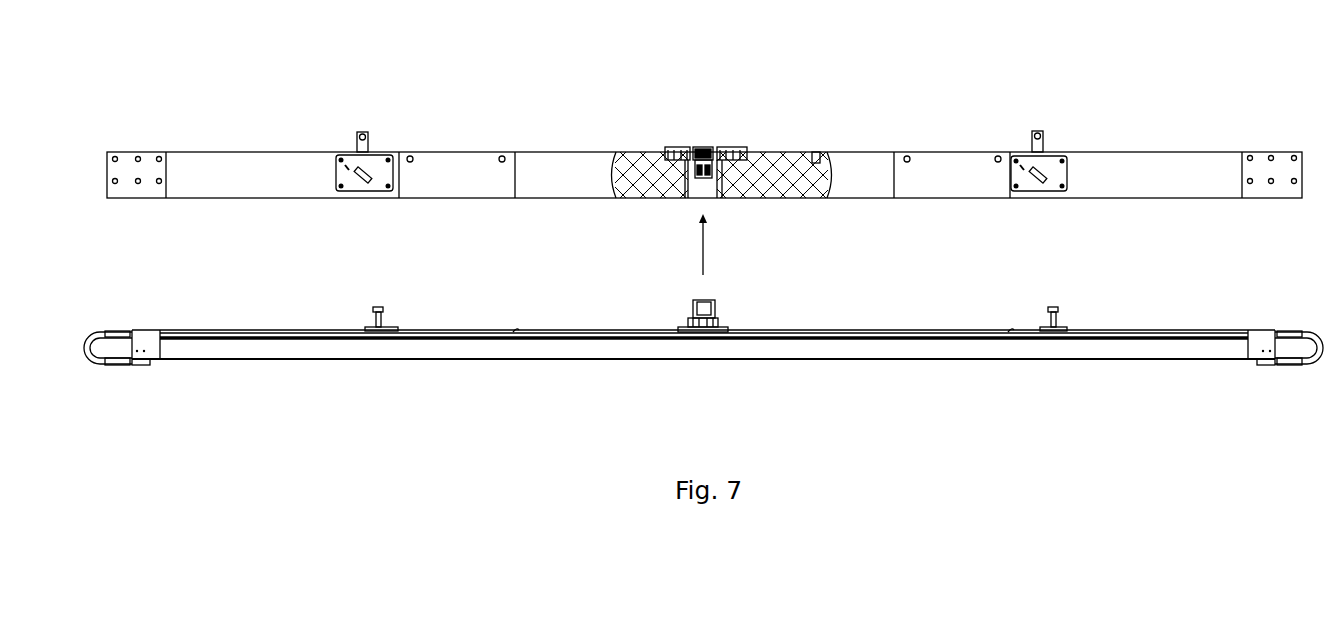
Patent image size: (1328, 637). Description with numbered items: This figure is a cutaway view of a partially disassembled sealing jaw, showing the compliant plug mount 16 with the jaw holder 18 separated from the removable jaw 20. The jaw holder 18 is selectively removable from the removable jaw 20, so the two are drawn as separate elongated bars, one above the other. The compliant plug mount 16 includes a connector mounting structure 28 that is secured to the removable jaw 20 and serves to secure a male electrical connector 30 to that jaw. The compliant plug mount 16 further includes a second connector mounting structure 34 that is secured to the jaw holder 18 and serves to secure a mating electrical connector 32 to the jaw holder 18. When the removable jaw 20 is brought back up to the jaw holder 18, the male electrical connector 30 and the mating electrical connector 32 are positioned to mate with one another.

The compliant plug mount 16 is at (720, 110).
The jaw holder 18 is at (964, 152).
The removable jaw 20 is at (942, 358).
The connector mounting structure 28 is at (735, 329).
The male electrical connector 30 is at (715, 304).
The mating electrical connector 32 is at (710, 175).
The connector mounting structure 34 is at (683, 147).